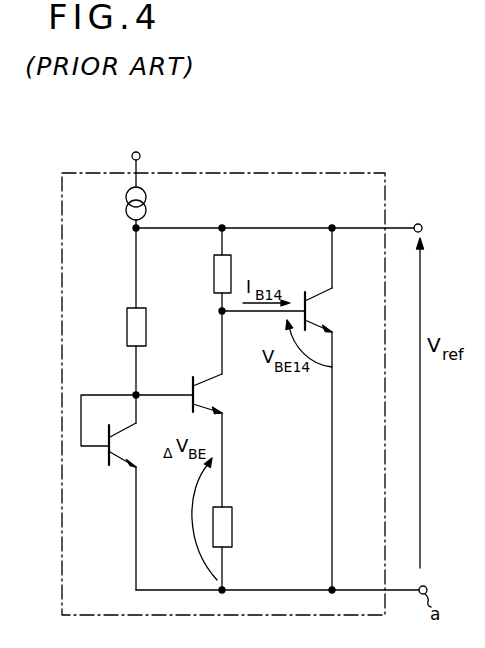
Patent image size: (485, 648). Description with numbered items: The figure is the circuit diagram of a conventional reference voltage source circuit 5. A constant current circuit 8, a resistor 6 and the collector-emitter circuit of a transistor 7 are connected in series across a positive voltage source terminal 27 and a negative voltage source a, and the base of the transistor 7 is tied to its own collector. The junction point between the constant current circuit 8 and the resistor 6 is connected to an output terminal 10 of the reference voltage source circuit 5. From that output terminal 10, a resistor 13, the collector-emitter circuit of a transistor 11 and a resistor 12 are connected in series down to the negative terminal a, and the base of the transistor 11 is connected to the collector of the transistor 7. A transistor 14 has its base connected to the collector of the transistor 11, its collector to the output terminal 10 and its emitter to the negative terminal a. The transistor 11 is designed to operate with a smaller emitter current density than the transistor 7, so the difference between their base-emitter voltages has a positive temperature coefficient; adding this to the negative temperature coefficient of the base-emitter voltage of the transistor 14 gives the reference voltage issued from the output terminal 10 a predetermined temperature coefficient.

The reference voltage source circuit 5 is at (236, 184).
The resistor 6 is at (127, 327).
The transistor 7 is at (116, 462).
The constant current circuit 8 is at (125, 205).
The output terminal 10 is at (421, 224).
The transistor 11 is at (201, 396).
The resistor 12 is at (232, 530).
The resistor 13 is at (214, 266).
The transistor 14 is at (312, 316).
The positive voltage source terminal 27 is at (150, 140).